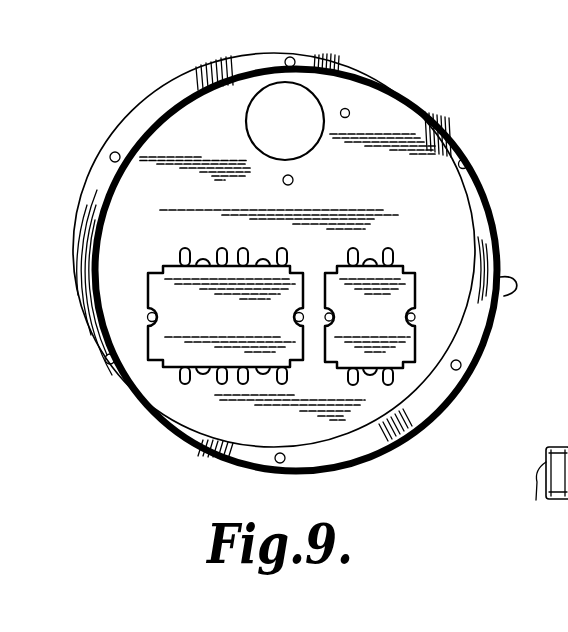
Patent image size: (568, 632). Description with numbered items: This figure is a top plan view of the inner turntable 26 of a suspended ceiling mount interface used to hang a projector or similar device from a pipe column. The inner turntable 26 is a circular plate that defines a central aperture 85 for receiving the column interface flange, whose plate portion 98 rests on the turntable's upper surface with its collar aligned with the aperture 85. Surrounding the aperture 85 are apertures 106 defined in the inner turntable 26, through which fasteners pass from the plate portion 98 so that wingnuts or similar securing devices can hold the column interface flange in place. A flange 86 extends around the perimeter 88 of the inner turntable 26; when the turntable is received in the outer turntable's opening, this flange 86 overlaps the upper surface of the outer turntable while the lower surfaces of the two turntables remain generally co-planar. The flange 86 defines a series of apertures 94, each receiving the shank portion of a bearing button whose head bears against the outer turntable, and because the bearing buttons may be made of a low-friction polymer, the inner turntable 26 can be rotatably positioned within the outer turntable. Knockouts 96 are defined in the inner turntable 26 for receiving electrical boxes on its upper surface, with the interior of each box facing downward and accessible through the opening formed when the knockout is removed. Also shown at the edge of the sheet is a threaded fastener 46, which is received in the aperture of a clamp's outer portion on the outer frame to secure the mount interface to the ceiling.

The inner turntable 26 is at (293, 180).
The threaded fastener 46 is at (556, 443).
The aperture 85 is at (296, 113).
The flange 86 is at (413, 427).
The perimeter 88 is at (518, 296).
The apertures 94 is at (113, 152).
The knockouts 96 is at (393, 290).
The plate portion 98 is at (293, 58).
The apertures 106 is at (217, 74).